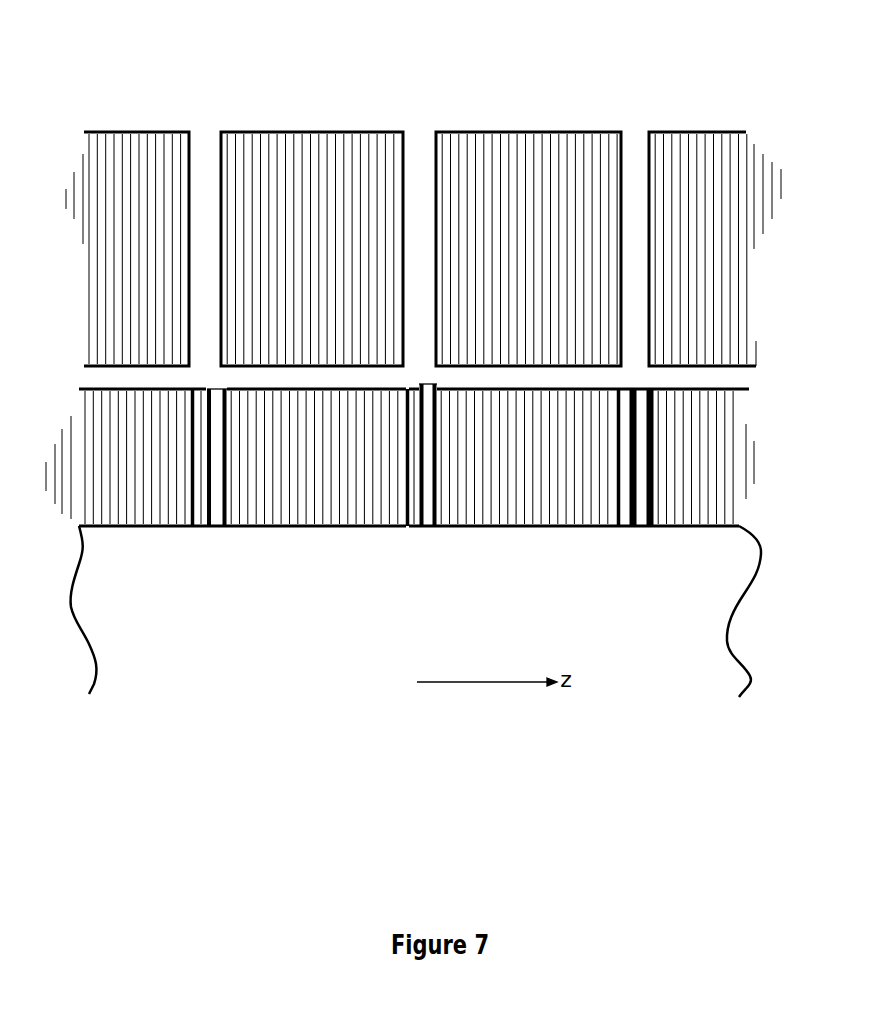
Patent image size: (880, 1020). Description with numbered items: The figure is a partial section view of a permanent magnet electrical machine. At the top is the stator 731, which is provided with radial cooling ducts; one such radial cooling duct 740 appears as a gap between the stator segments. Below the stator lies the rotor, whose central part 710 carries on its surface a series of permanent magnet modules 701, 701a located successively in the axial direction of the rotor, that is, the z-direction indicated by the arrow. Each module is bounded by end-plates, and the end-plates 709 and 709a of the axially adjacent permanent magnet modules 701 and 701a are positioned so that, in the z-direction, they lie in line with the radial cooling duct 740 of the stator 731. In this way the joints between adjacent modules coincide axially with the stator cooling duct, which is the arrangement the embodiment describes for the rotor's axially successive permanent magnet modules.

The stator 731 is at (738, 104).
The radial cooling duct 740 is at (417, 182).
The permanent magnet module 701 is at (262, 510).
The permanent magnet module 701a is at (520, 500).
The end-plate 709 is at (407, 522).
The end-plate 709a is at (425, 522).
The central part of rotor 710 is at (147, 562).